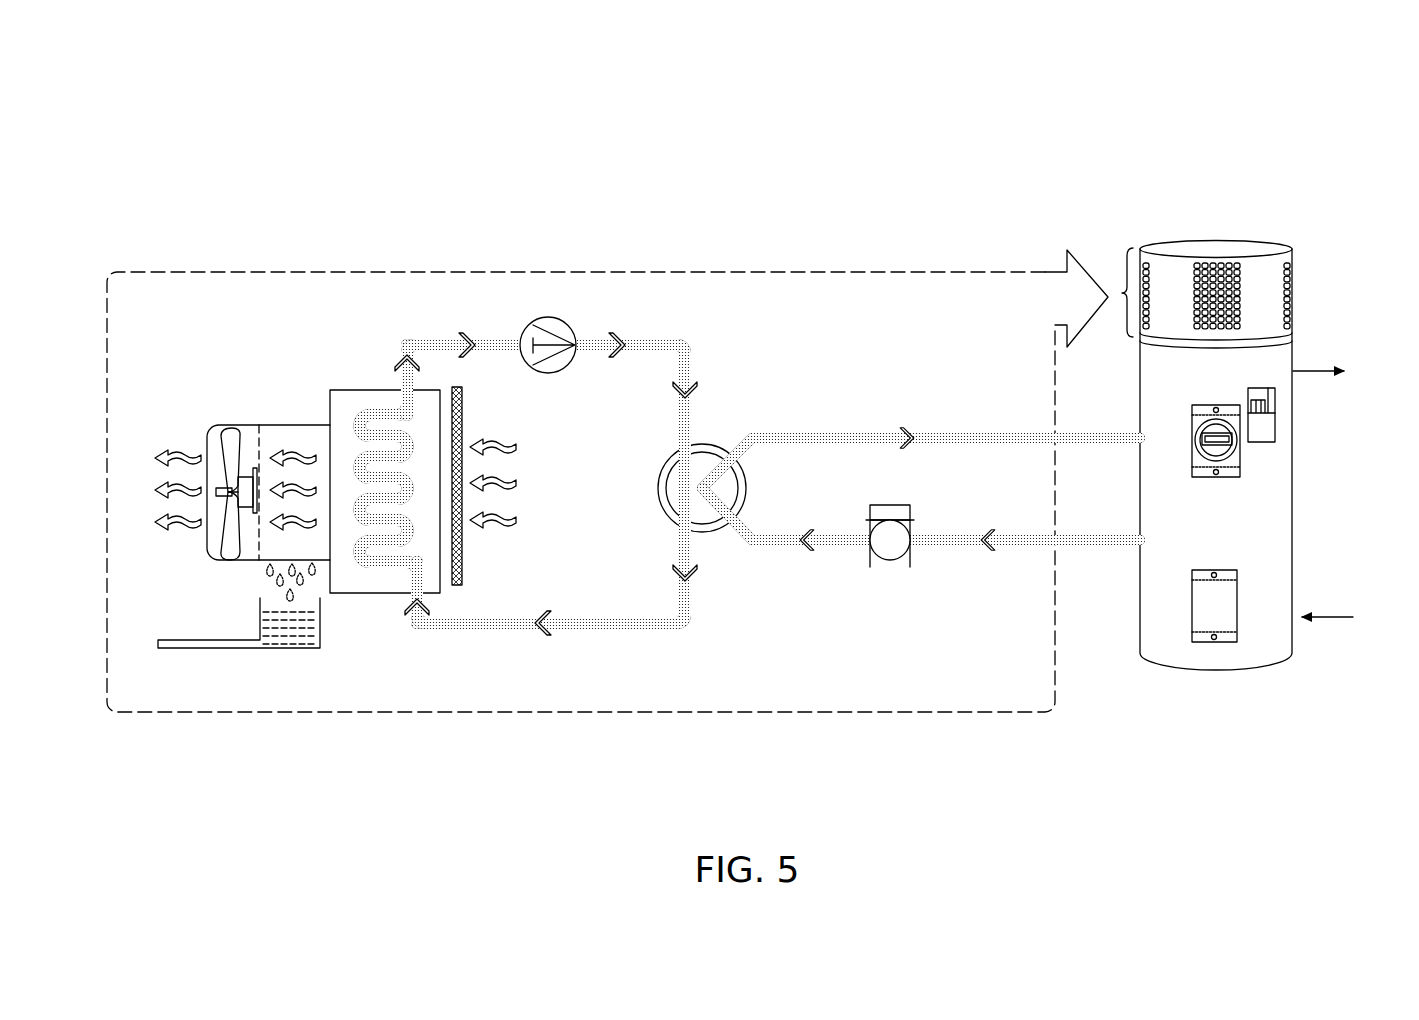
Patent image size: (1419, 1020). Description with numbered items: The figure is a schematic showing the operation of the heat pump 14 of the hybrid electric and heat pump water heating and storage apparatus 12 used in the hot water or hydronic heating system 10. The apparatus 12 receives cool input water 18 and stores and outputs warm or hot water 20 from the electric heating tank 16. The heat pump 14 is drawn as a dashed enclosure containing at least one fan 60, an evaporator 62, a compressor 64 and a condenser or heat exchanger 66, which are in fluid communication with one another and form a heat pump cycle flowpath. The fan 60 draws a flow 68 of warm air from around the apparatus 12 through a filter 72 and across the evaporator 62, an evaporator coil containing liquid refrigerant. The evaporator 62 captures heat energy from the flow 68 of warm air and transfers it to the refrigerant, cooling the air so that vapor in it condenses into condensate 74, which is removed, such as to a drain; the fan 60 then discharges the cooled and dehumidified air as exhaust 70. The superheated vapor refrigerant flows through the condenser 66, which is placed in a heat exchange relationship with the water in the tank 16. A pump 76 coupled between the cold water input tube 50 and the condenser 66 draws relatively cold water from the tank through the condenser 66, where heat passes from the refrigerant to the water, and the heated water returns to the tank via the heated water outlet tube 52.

The hot water or hydronic heating system 10 is at (889, 84).
The water heating and storage apparatus 12 is at (1241, 413).
The heat pump 14 is at (835, 270).
The electric heating tank 16 is at (1300, 520).
The cool input water 18 is at (1320, 619).
The output warm or hot water 20 is at (1305, 374).
The cold water input tube 50 is at (1018, 546).
The heated water outlet tube 52 is at (958, 432).
The fan 60 is at (229, 418).
The evaporator 62 is at (376, 572).
The compressor 64 is at (548, 317).
The condenser or heat exchanger 66 is at (705, 444).
The flow of warm air 68 is at (298, 458).
The exhaust 70 is at (176, 460).
The filter 72 is at (475, 578).
The condensate 74 is at (260, 618).
The pump 76 is at (890, 573).